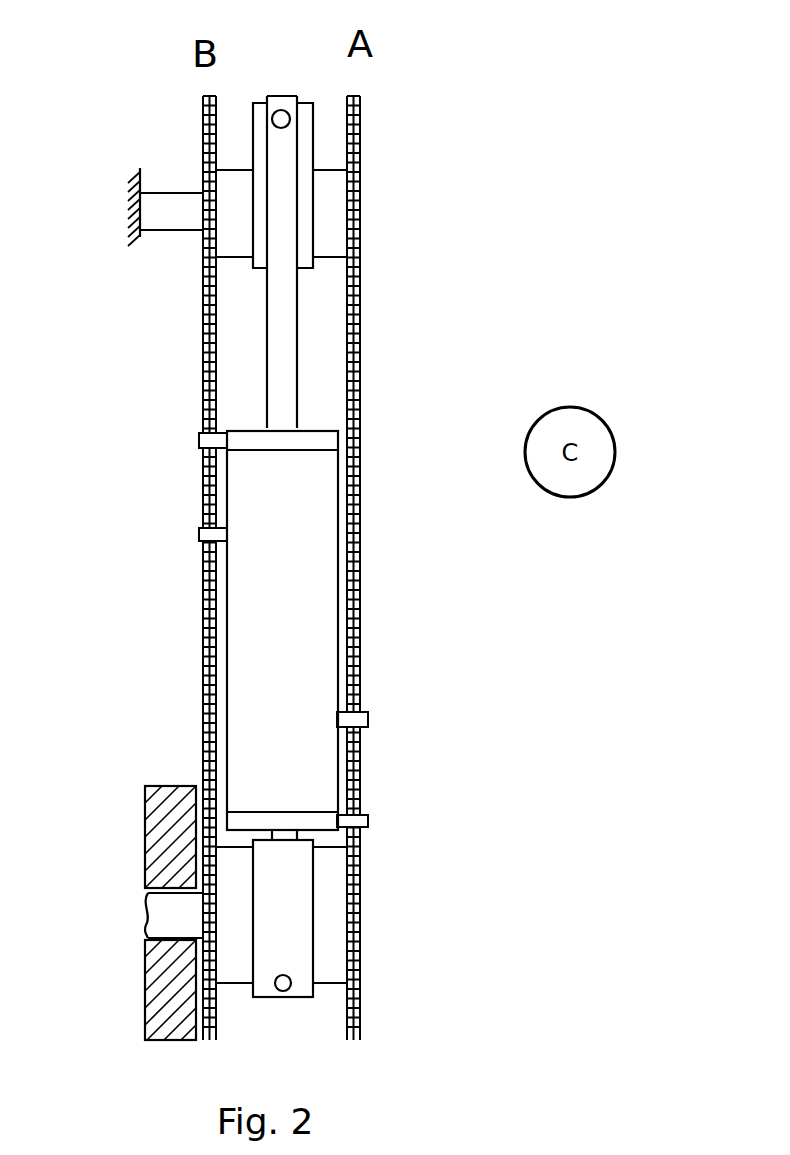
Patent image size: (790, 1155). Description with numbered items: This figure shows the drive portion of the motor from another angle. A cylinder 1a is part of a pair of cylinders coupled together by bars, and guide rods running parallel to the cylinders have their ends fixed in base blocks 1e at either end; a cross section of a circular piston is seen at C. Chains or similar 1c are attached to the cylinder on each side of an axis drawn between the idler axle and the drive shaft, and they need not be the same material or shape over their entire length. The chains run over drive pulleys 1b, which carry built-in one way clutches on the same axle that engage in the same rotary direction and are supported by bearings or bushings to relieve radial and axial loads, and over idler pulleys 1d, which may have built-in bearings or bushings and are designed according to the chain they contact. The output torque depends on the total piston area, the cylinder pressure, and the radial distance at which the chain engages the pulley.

The cylinder 1a is at (320, 638).
The drive pulley 1b is at (228, 968).
The chain 1c is at (358, 348).
The idler pulley 1d is at (333, 183).
The base block 1e is at (307, 213).